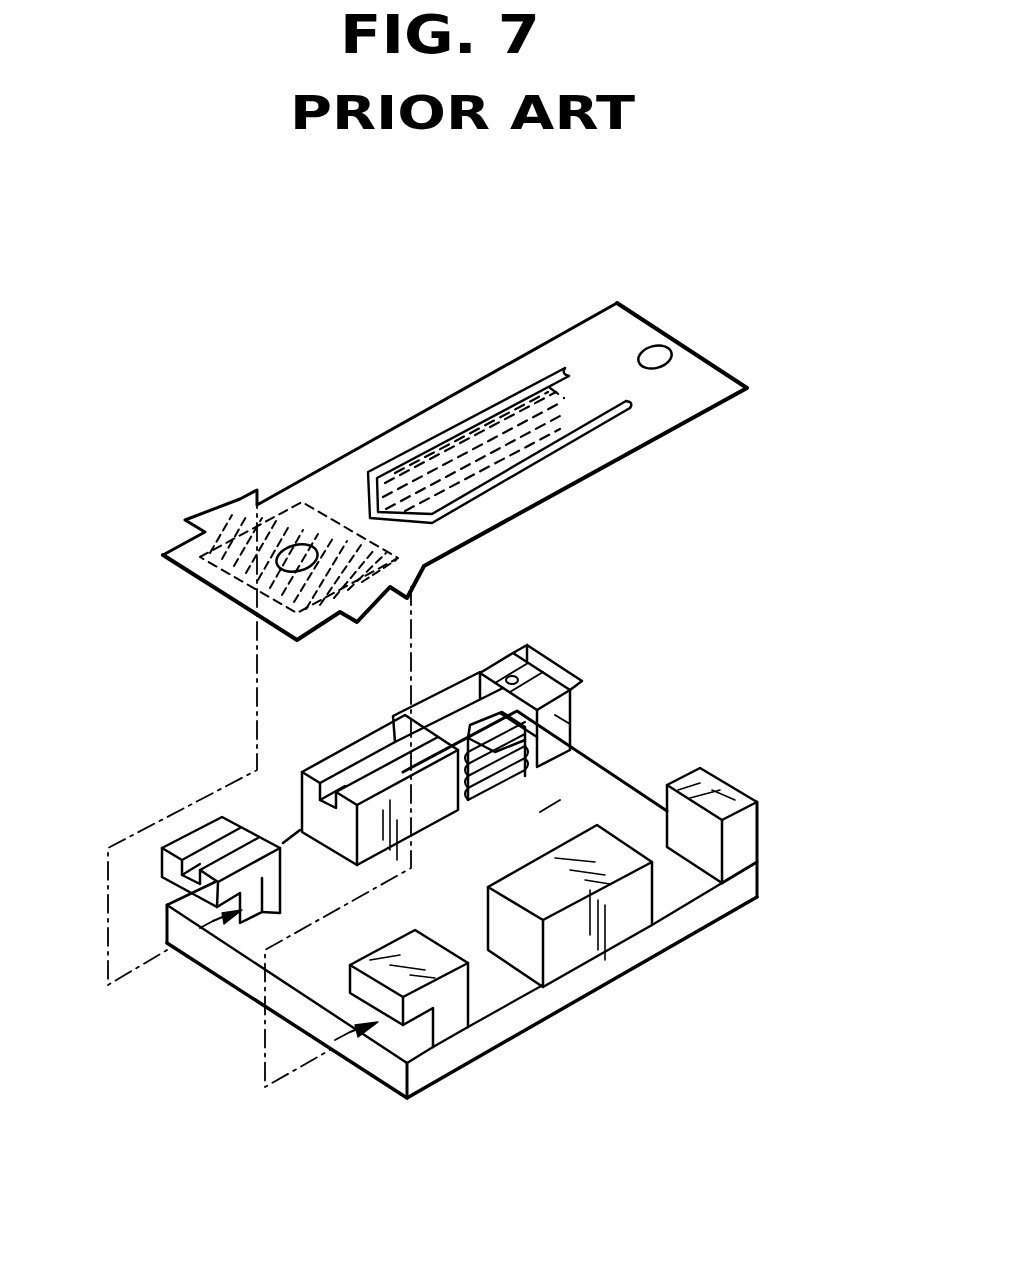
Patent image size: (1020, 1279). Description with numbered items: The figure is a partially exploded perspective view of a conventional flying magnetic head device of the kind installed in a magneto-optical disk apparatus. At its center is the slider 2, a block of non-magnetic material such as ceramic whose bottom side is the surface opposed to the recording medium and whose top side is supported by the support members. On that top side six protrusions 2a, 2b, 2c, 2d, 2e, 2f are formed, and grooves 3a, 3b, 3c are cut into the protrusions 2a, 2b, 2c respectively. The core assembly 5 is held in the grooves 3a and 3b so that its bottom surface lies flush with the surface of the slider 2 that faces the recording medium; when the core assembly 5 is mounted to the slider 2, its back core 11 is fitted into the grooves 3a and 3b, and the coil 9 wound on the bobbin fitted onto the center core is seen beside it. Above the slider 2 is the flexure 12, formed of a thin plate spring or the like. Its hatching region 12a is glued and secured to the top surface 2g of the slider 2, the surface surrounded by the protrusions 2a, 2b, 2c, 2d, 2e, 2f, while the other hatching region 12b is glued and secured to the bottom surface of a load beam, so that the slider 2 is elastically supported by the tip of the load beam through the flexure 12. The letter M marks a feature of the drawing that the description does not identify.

The slider 2 is at (690, 940).
The protrusion 2a is at (562, 720).
The protrusion 2b is at (540, 812).
The protrusion 2c is at (263, 907).
The protrusion 2d is at (742, 850).
The protrusion 2e is at (613, 943).
The protrusion 2f is at (447, 1020).
The top surface 2g is at (545, 1015).
The groove 3a is at (540, 680).
The groove 3b is at (363, 767).
The groove 3c is at (213, 853).
The core assembly 5 is at (535, 662).
The coil 9 is at (550, 737).
The back core 11 is at (507, 675).
The flexure 12 is at (390, 418).
The hatching region 12a is at (570, 438).
The hatching region 12b is at (203, 580).
The shaft M is at (467, 710).